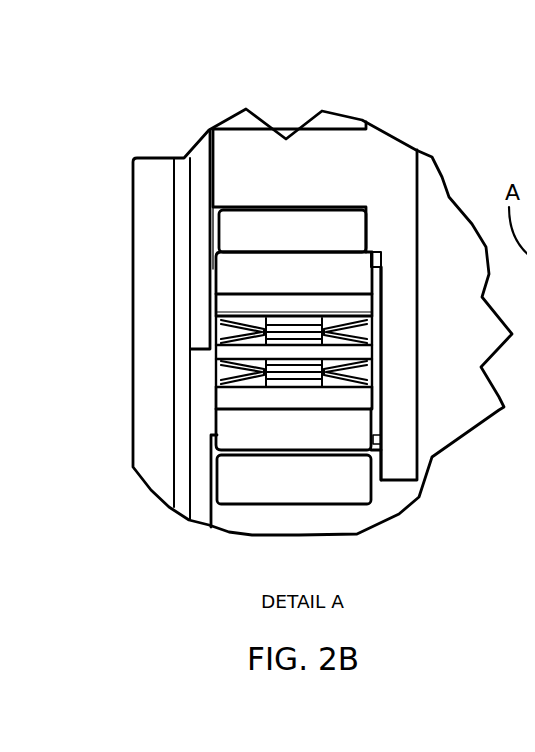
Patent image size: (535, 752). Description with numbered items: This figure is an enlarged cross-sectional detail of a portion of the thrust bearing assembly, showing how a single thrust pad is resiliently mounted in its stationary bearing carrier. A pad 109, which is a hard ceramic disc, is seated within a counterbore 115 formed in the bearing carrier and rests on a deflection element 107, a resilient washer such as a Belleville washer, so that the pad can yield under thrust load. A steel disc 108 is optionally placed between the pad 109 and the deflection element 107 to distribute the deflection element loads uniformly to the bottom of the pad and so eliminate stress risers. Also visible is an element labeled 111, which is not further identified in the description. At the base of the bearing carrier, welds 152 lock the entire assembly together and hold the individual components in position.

The deflection element 107 is at (248, 332).
The steel disc 108 is at (300, 308).
The pad 109 is at (272, 278).
The cap 111 is at (233, 235).
The counterbore 115 is at (367, 348).
The welds 152 is at (196, 341).